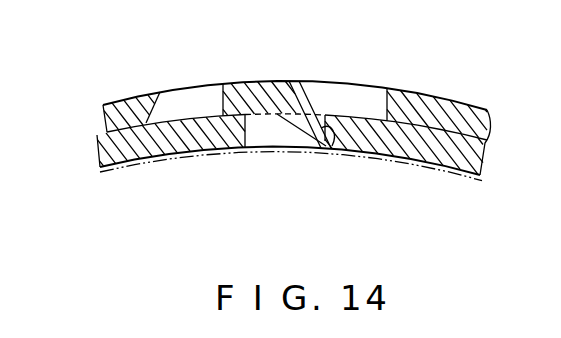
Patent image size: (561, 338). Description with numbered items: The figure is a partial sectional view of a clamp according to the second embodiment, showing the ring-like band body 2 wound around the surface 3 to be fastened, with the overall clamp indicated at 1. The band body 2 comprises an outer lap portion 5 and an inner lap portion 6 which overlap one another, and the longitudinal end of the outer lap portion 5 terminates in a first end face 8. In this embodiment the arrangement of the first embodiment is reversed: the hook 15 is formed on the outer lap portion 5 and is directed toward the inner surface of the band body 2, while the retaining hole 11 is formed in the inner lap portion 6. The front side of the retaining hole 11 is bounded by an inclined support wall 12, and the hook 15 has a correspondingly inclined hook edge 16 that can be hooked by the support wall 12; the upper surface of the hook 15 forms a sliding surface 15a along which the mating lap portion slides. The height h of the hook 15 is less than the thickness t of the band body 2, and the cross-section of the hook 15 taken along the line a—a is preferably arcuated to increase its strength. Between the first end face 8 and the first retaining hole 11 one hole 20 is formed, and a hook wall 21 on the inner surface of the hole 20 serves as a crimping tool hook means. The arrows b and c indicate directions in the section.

The piston ring 1 is at (118, 85).
The band body 2 is at (418, 100).
The surface to be fastened 3 is at (165, 160).
The outer lap portion 5 is at (475, 118).
The inner lap portion 6 is at (452, 160).
The first end face 8 is at (103, 120).
The retaining hole 11 is at (250, 140).
The support wall 12 is at (398, 153).
The hook 15 is at (311, 130).
The sliding surface 15a is at (350, 153).
The hook edge 16 is at (313, 99).
The hole 20 is at (200, 105).
The hook wall 21 is at (155, 96).
The line a— a is at (325, 108).
The direction b is at (300, 63).
The direction c is at (330, 193).
The height of hook h is at (334, 141).
The thickness of band body t is at (495, 147).